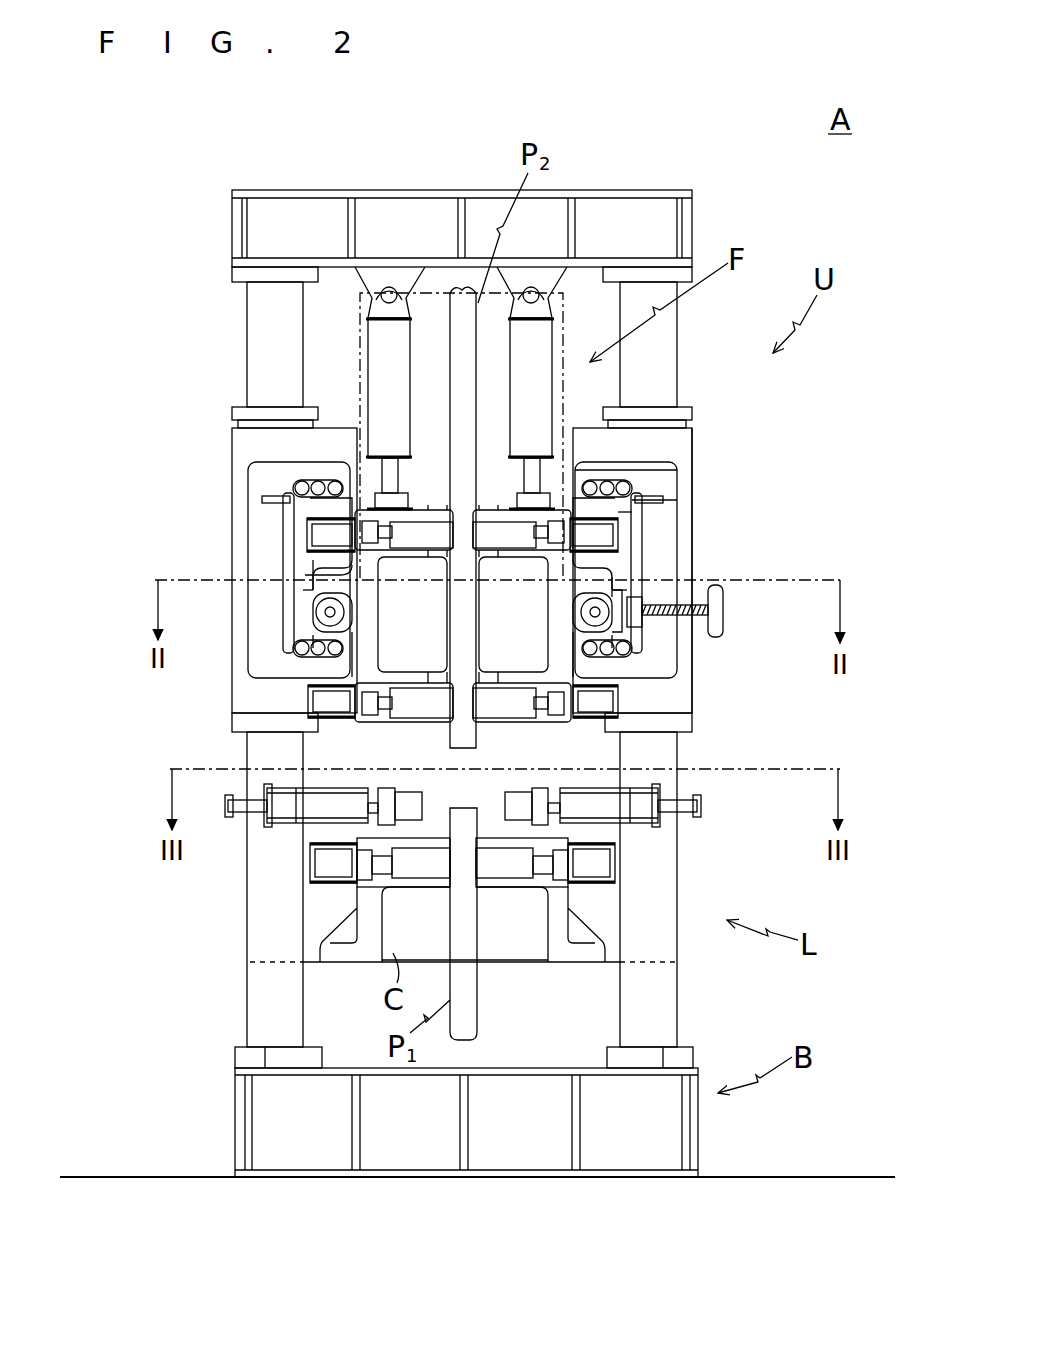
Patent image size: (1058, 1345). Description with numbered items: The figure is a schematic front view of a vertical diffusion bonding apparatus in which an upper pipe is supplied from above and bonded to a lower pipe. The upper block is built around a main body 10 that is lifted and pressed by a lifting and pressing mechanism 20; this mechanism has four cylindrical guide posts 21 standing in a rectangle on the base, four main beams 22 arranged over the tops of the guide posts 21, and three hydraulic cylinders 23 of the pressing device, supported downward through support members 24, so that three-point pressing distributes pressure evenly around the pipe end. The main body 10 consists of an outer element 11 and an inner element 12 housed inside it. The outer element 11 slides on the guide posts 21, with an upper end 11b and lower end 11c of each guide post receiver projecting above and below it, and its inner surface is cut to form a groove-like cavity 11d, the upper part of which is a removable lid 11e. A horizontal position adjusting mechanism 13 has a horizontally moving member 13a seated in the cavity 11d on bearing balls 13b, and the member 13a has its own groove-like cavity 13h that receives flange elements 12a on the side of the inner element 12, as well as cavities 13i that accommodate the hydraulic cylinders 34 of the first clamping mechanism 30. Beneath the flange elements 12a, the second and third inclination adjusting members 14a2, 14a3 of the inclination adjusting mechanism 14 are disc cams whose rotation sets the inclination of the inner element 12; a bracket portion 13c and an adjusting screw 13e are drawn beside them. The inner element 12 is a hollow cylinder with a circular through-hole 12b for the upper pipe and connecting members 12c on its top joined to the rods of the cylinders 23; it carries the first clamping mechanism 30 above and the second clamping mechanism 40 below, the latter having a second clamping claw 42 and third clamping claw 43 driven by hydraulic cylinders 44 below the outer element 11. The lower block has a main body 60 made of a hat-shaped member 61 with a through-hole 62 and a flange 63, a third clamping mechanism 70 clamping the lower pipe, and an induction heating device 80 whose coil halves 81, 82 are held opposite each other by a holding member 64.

The main body of the upper block 10 is at (780, 465).
The outer element 11 is at (229, 445).
The upper end of the guide post receiver 11b is at (232, 408).
The lower end of the guide post receiver 11c is at (683, 733).
The groove-like cavity 11d is at (640, 550).
The lid 11e is at (648, 463).
The inner element 12 is at (393, 727).
The flange element 12a is at (305, 590).
The circular through-hole 12b is at (445, 672).
The connecting member 12c is at (265, 502).
The horizontal position adjusting mechanism 13 is at (650, 573).
The horizontally moving member 13a is at (320, 572).
The bearing balls 13b is at (318, 640).
The bracket end 13c is at (700, 590).
The adjusting screw 13e is at (723, 628).
The groove-like cavity 13h is at (318, 615).
The cavity for accommodating the hydraulic cylinders 13i is at (627, 520).
The inclination adjusting mechanism 14 is at (610, 613).
The second inclination adjusting member 14a2 is at (318, 597).
The third inclination adjusting member 14a3 is at (647, 620).
The lifting and pressing mechanism 20 is at (688, 380).
The guide post 21 is at (248, 312).
The main beam 22 is at (600, 190).
The hydraulic cylinder 23 is at (358, 353).
The support member 24 is at (352, 282).
The first clamping mechanism 30 is at (302, 525).
The hydraulic cylinder 34 is at (300, 540).
The second clamping mechanism 40 is at (292, 697).
The second clamping claw 42 is at (423, 720).
The third clamping claw 43 is at (508, 720).
The hydraulic cylinder 44 is at (582, 720).
The main body of the lower block 60 is at (603, 913).
The hat-shaped member 61 is at (513, 888).
The through-hole 62 is at (438, 843).
The flange 63 is at (317, 960).
The holding member 64 is at (563, 828).
The third clamping mechanism 70 is at (335, 892).
The induction heating device 80 is at (277, 835).
The induction heating coil half 81 is at (337, 855).
The induction heating coil half 82 is at (553, 823).